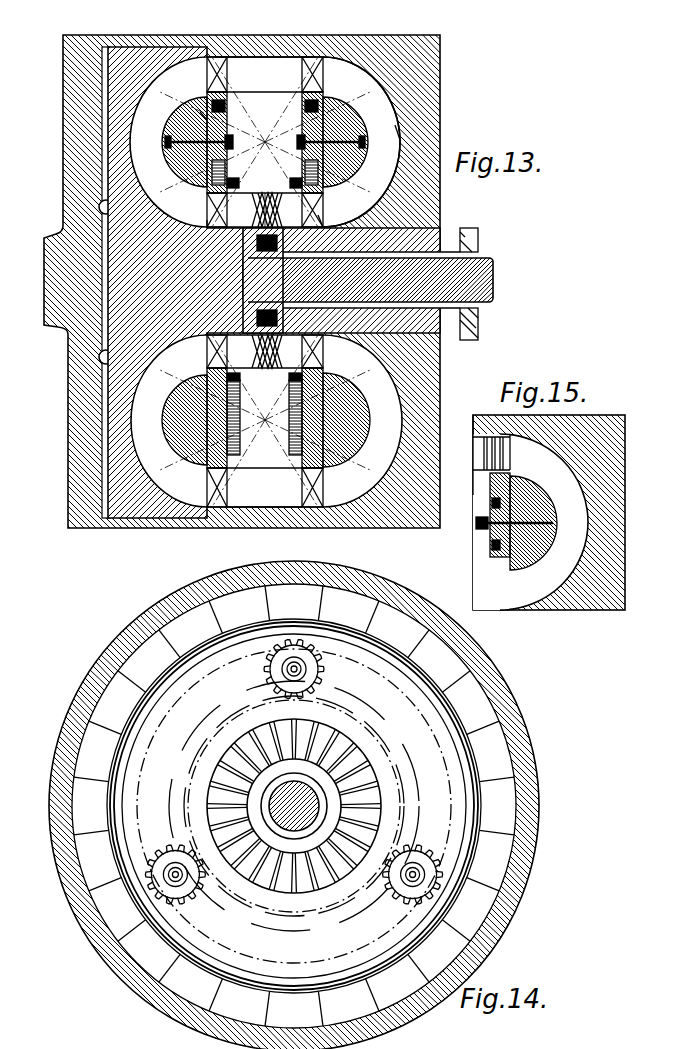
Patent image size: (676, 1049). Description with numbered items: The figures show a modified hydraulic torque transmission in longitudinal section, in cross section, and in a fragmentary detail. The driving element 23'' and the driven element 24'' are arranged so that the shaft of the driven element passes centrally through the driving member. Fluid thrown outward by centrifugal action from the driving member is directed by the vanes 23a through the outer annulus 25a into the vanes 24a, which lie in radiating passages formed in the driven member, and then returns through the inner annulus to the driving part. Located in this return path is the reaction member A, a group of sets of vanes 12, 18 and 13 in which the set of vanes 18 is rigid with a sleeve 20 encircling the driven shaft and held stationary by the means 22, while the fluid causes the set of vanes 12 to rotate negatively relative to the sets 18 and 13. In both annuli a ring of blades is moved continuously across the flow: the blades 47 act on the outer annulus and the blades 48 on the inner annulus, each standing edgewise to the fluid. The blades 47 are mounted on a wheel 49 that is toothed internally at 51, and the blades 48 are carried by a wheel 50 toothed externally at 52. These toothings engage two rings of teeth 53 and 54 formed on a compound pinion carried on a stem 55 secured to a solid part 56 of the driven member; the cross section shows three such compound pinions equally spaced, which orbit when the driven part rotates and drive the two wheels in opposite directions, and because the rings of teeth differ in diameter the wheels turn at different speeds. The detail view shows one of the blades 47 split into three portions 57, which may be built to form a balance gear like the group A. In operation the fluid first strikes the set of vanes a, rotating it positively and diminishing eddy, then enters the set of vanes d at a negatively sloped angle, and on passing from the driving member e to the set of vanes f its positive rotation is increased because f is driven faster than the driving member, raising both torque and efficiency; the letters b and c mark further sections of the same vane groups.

In FIG. 13, the set of vanes 12 is at (255, 242).
In FIG. 13, the set of vanes 13 is at (277, 280).
In FIG. 13, the set of vanes 18 is at (245, 265).
In FIG. 13, the sleeve 20 is at (372, 258).
In FIG. 14, the sleeve 20 is at (266, 796).
In FIG. 13, the holding means 22 is at (468, 228).
In FIG. 13, the driving element 23'' is at (257, 280).
In FIG. 14, the driving element 23'' is at (405, 789).
In FIG. 13, the vanes 23a is at (332, 282).
In FIG. 13, the driven element 24'' is at (275, 282).
In FIG. 13, the vanes 24a is at (266, 282).
In FIG. 13, the outer annulus 25a is at (293, 538).
In FIG. 13, the ring of blades 47 is at (218, 78).
In FIG. 14, the ring of blades 47 is at (176, 606).
In FIG. 13, the ring of blades 48 is at (325, 80).
In FIG. 14, the ring of blades 48 is at (343, 804).
In FIG. 13, the wheel 49 is at (225, 98).
In FIG. 14, the wheel 49 is at (294, 806).
In FIG. 13, the wheel 50 is at (224, 182).
In FIG. 14, the wheel 50 is at (309, 806).
In FIG. 13, the internal teeth 51 is at (200, 126).
In FIG. 14, the internal teeth 51 is at (304, 793).
In FIG. 13, the external teeth 52 is at (226, 170).
In FIG. 14, the external teeth 52 is at (293, 771).
In FIG. 13, the ring of teeth 53 is at (185, 146).
In FIG. 14, the ring of teeth 53 is at (293, 791).
In FIG. 13, the ring of teeth 54 is at (226, 116).
In FIG. 14, the ring of teeth 54 is at (294, 779).
In FIG. 13, the stem 55 is at (298, 133).
In FIG. 14, the stem 55 is at (294, 800).
In FIG. 13, the solid part 56 is at (350, 160).
In FIG. 15, the solid part 56 is at (536, 546).
In FIG. 15, the blade portions 57 is at (507, 456).
In FIG. 13, the set of vanes a is at (222, 60).
In FIG. 13, the reference point b is at (200, 116).
In FIG. 13, the reference point c is at (209, 226).
In FIG. 13, the set of vanes d is at (320, 200).
In FIG. 13, the driving member e is at (392, 130).
In FIG. 13, the set of vanes f is at (320, 57).
In FIG. 13, the reaction member A is at (260, 200).